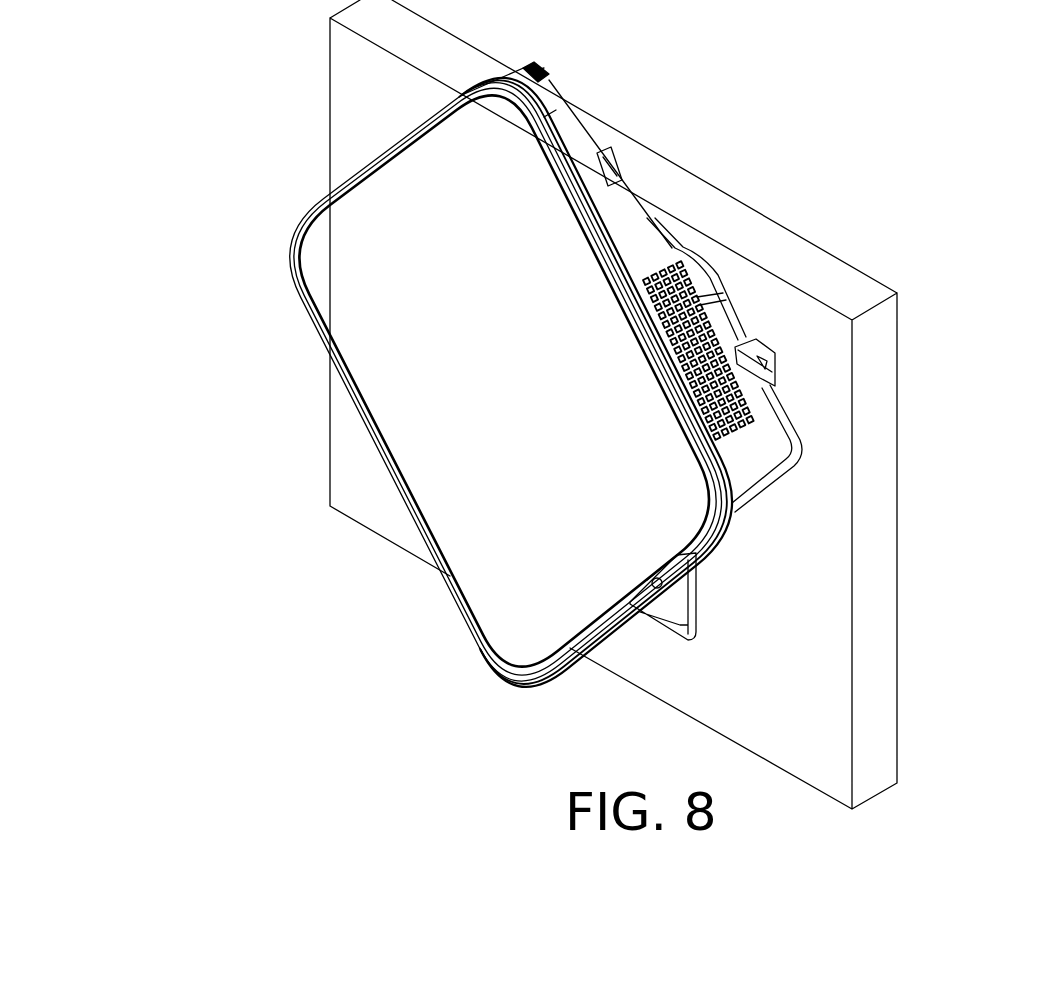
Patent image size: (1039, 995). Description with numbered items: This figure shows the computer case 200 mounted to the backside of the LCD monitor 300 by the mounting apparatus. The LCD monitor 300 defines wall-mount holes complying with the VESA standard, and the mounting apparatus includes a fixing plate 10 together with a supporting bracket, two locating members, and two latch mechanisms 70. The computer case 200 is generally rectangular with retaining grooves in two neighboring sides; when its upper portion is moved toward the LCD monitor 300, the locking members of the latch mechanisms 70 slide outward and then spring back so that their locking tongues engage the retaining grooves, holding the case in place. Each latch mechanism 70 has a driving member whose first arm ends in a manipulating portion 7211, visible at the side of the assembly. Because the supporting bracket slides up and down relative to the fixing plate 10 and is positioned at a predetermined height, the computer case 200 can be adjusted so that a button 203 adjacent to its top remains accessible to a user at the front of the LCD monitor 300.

The fixing plate 10 is at (695, 598).
The latch mechanism 70 is at (755, 342).
The computer case 200 is at (410, 355).
The button 203 is at (570, 92).
The LCD monitor 300 is at (735, 215).
The manipulating portion 7211 is at (768, 383).